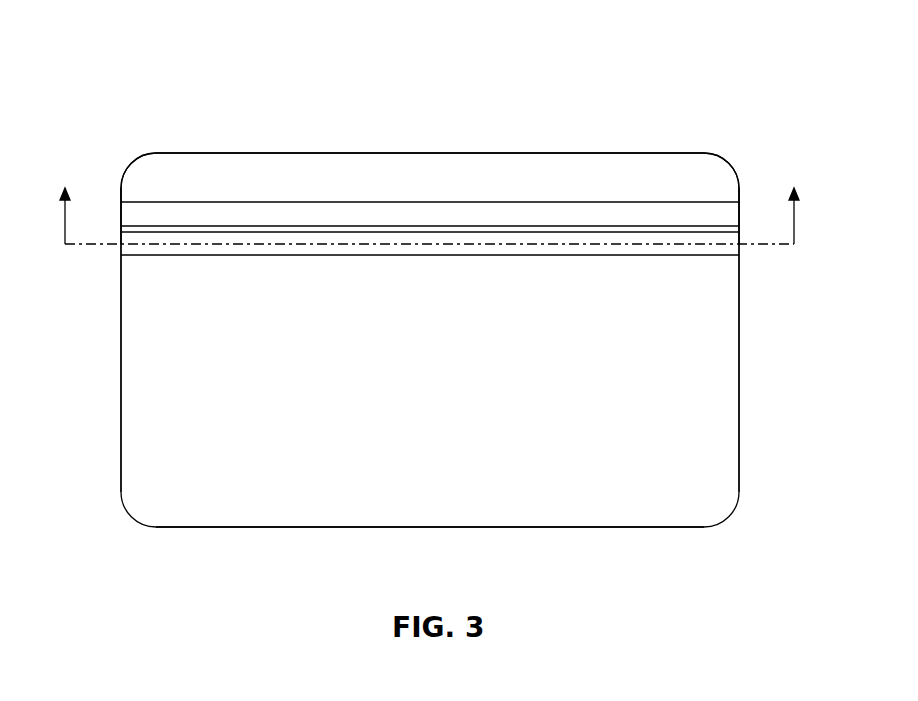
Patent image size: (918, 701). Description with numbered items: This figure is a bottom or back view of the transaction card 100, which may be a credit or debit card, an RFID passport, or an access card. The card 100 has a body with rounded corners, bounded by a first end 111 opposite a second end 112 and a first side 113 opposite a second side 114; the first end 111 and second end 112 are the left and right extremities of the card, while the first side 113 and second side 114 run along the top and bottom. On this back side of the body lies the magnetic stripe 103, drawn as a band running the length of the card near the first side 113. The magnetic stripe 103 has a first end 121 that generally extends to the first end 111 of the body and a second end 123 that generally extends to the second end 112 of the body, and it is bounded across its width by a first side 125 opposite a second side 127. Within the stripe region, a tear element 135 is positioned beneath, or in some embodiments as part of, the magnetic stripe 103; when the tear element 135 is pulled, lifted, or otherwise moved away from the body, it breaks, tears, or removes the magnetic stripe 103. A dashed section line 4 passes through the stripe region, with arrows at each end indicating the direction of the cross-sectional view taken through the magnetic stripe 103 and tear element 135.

The transaction card 100 is at (142, 88).
The section line 4- 4 is at (429, 202).
The magnetic stripe 103 is at (607, 224).
The first end 111 is at (739, 377).
The second end 112 is at (121, 368).
The first side 113 is at (231, 153).
The second side 114 is at (623, 527).
The first end 121 is at (730, 238).
The second end 123 is at (121, 213).
The first side 125 is at (380, 201).
The second side 127 is at (197, 255).
The tear element 135 is at (257, 225).